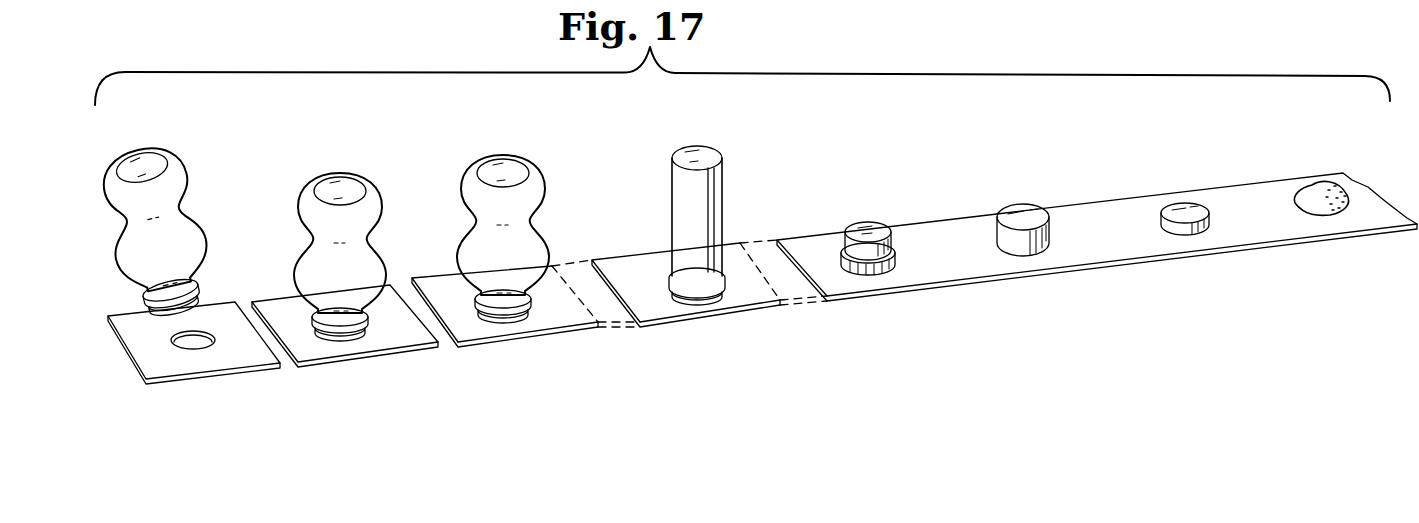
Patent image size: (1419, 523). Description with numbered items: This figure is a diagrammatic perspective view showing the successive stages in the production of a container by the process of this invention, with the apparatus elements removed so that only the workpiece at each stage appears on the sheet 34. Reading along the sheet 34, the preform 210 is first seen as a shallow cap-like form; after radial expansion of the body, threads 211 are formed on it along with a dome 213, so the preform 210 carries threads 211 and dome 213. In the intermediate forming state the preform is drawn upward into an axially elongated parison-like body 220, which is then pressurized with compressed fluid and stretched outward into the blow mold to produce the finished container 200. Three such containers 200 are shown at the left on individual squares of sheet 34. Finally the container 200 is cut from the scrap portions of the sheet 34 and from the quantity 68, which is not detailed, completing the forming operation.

The container 200 is at (178, 177).
The sheet 34 is at (220, 312).
The parison-like body 220 is at (715, 180).
The dome 213 is at (868, 221).
The threads 211 is at (869, 264).
The preform 210 is at (1000, 260).
The quantity 68 is at (1337, 215).